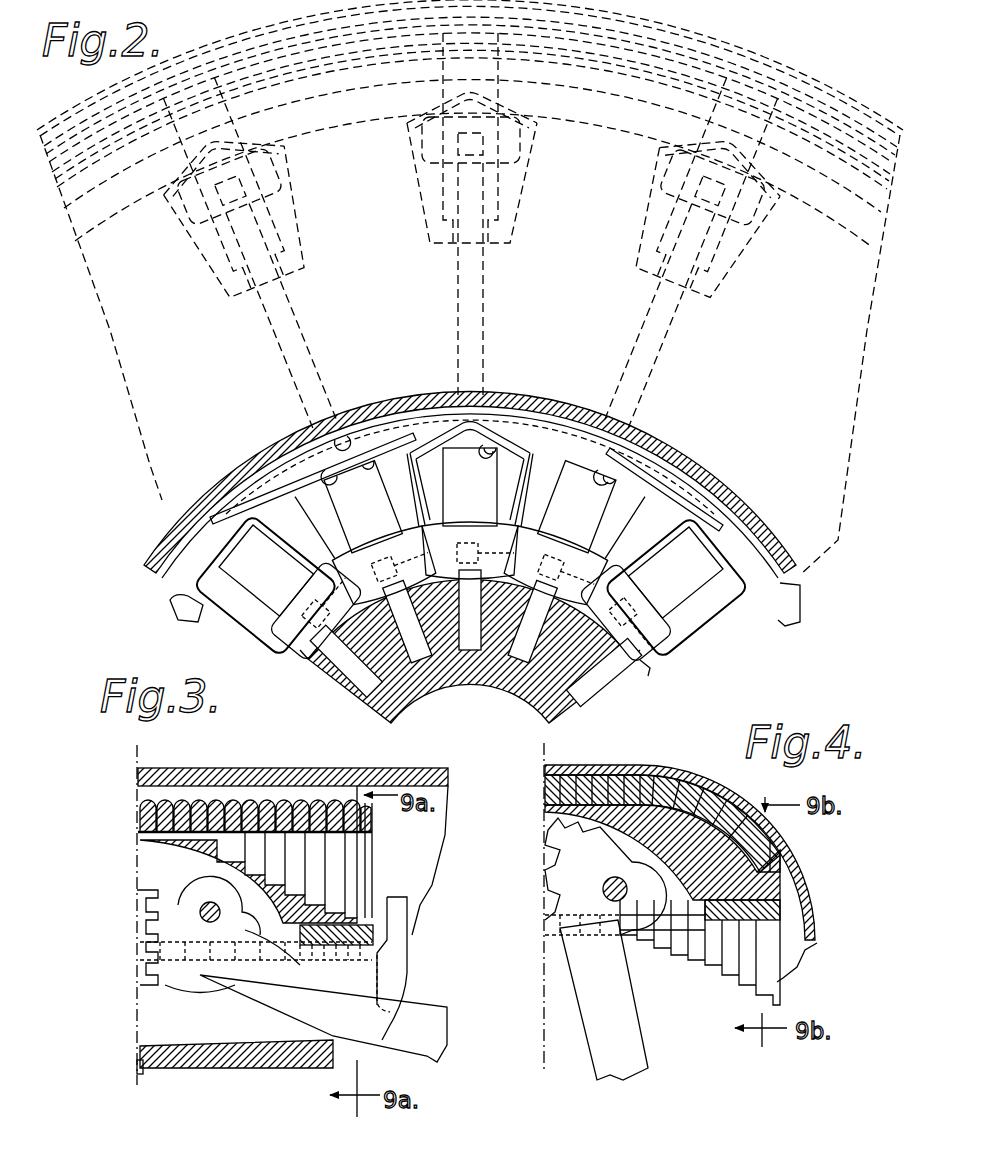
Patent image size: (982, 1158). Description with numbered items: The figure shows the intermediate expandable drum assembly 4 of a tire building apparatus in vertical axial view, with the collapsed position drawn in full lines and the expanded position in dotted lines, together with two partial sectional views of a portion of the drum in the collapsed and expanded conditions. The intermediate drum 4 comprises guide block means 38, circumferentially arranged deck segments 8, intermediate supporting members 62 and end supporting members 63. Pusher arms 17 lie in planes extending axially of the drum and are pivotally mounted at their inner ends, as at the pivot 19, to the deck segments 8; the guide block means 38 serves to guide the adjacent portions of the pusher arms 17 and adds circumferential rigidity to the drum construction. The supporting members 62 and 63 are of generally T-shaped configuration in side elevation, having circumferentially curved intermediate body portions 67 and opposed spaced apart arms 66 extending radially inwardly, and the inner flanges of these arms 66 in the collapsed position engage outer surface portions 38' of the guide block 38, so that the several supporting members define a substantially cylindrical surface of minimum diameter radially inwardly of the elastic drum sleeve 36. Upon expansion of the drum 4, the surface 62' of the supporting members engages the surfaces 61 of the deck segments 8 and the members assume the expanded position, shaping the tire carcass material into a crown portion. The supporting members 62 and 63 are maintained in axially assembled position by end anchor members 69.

In FIG. 2, the expandable drum assembly 4 is at (703, 655).
In FIG. 3, the expandable drum assembly 4 is at (385, 864).
In FIG. 4, the expandable drum assembly 4 is at (787, 987).
In FIG. 3, the deck segments 8 is at (268, 910).
In FIG. 4, the deck segments 8 is at (657, 905).
In FIG. 2, the pusher arms 17 is at (620, 368).
In FIG. 3, the pusher arms 17 is at (420, 1006).
In FIG. 4, the pusher arms 17 is at (633, 1044).
In FIG. 3, the pivot 19 is at (195, 902).
In FIG. 4, the pivot 19 is at (603, 885).
In FIG. 2, the elastic drum sleeve 36 is at (787, 78).
In FIG. 3, the elastic drum sleeve 36 is at (250, 768).
In FIG. 4, the elastic drum sleeve 36 is at (617, 770).
In FIG. 2, the guide block means 38 is at (470, 656).
In FIG. 3, the guide block means 38 is at (235, 1083).
In FIG. 2, the outer surface portions of guide block 38' is at (676, 681).
In FIG. 3, the outer surface portions of guide block 38' is at (416, 968).
In FIG. 3, the surfaces of deck segments 61 is at (230, 843).
In FIG. 4, the surfaces of deck segments 61 is at (563, 812).
In FIG. 2, the intermediate supporting members 62 is at (419, 463).
In FIG. 3, the intermediate supporting members 62 is at (255, 783).
In FIG. 4, the intermediate supporting members 62 is at (662, 803).
In FIG. 2, the surface of supporting members 62' is at (491, 422).
In FIG. 2, the end supporting members 63 is at (453, 410).
In FIG. 3, the end supporting members 63 is at (372, 817).
In FIG. 4, the end supporting members 63 is at (788, 861).
In FIG. 2, the arms 66 is at (200, 610).
In FIG. 2, the field coil 67 is at (347, 605).
In FIG. 2, the end anchor members 69 is at (285, 612).
In FIG. 3, the end anchor members 69 is at (340, 935).
In FIG. 4, the end anchor members 69 is at (727, 955).